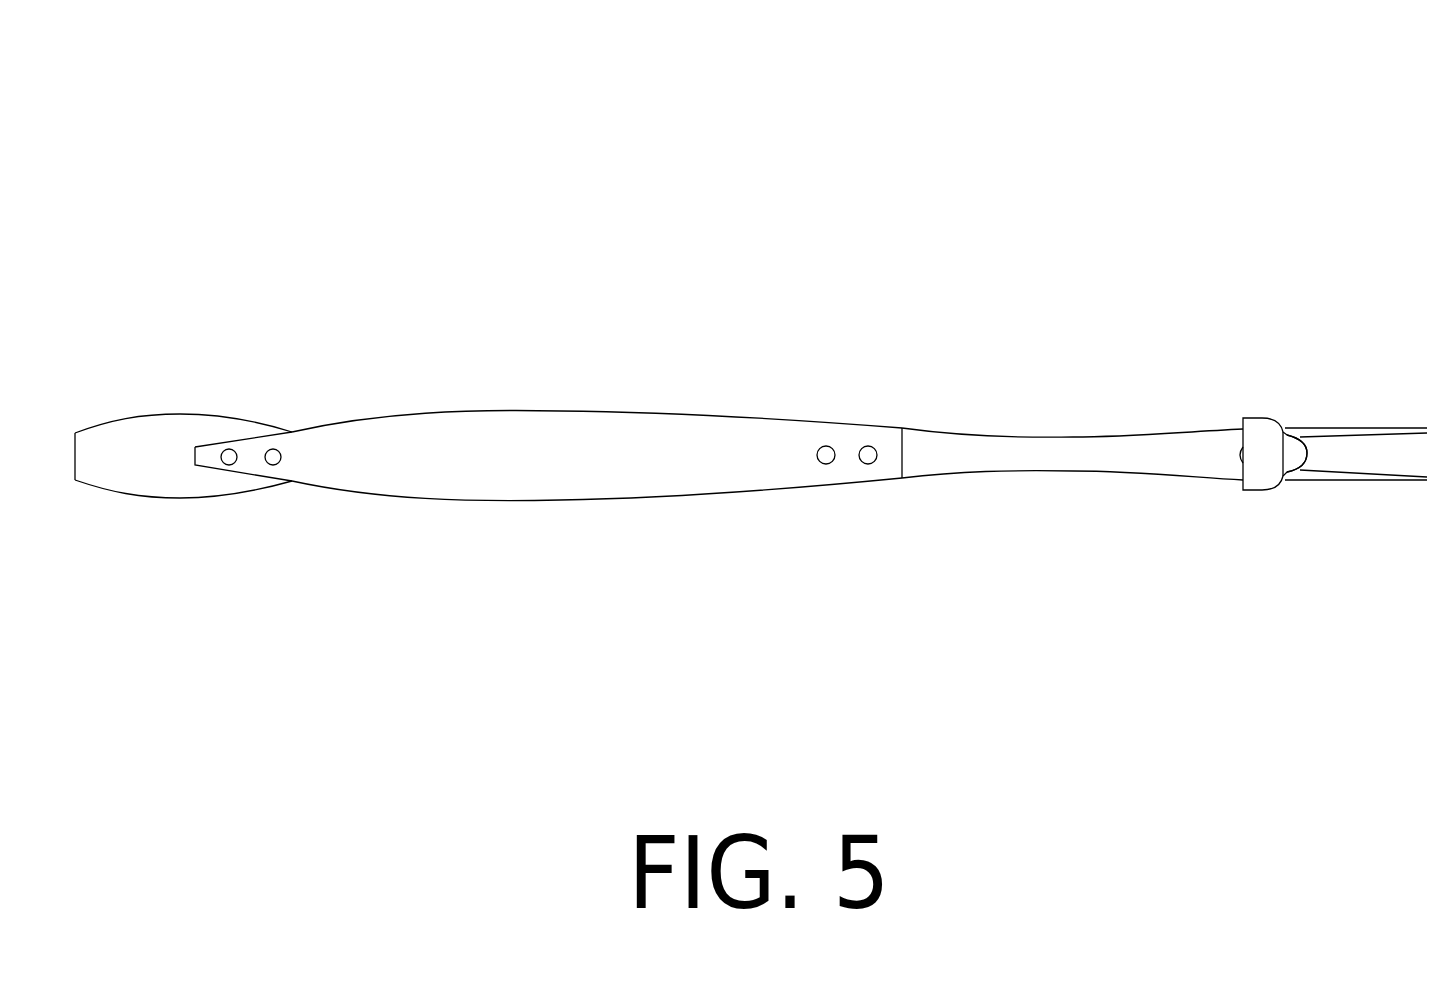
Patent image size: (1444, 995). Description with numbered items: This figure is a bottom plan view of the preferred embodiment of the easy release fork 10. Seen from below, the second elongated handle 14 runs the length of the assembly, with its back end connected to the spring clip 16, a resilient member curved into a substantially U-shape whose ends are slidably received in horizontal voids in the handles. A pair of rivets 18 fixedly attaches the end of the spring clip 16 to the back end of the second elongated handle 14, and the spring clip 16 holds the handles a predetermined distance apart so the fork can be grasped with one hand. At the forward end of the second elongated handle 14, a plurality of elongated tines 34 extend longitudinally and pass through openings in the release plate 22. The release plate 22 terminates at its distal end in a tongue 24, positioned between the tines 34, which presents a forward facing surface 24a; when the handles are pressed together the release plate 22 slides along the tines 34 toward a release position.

The easy release fork 10 is at (710, 163).
The second elongated handle 14 is at (558, 432).
The spring clip 16 is at (193, 485).
The rivets 18 is at (273, 449).
The release plate 22 is at (1273, 453).
The tongue 24 is at (1298, 477).
The forward facing surface 24a is at (1298, 457).
The tines 34 is at (1360, 433).